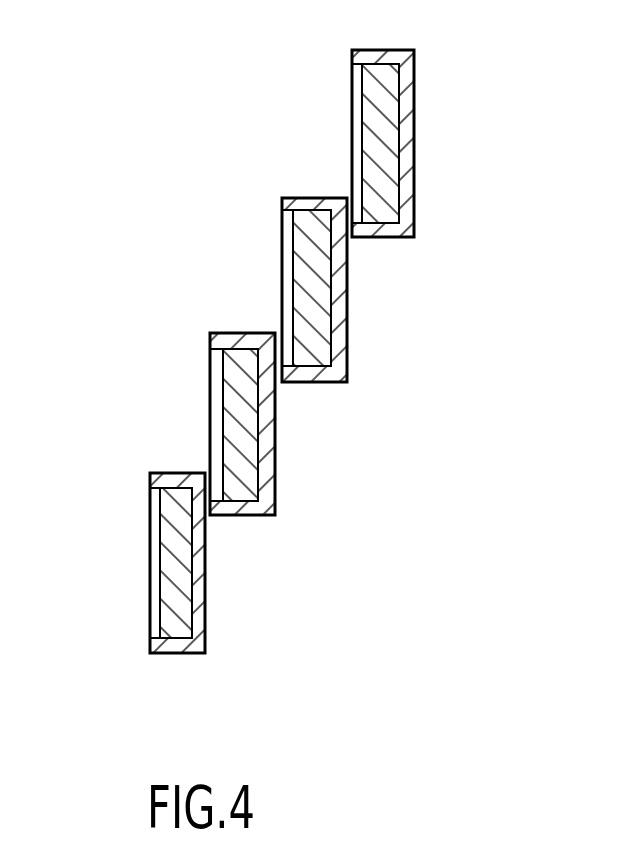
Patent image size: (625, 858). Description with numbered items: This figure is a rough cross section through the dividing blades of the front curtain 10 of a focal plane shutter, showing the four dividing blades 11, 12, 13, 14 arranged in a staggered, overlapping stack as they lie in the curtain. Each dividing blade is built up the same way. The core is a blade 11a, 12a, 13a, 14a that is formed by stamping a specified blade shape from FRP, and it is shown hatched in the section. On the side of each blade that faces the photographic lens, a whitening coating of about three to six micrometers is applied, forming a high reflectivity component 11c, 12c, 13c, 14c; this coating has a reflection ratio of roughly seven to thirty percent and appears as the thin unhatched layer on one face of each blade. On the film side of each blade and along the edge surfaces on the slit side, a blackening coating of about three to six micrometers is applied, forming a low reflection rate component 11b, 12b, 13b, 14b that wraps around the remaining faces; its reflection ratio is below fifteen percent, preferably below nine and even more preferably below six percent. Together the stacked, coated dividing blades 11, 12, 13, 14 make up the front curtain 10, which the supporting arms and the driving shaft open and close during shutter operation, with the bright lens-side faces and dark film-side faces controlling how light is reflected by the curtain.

The front curtain 10 is at (258, 218).
The dividing blade 11 is at (440, 184).
The blade 11a is at (368, 98).
The low reflection rate component 11b is at (353, 57).
The high reflectivity component 11c is at (356, 133).
The dividing blade 12 is at (372, 334).
The blade 12a is at (303, 270).
The low reflection rate component 12b is at (303, 203).
The high reflectivity component 12c is at (288, 298).
The dividing blade 13 is at (300, 457).
The blade 13a is at (237, 443).
The low reflection rate component 13b is at (214, 340).
The high reflectivity component 13c is at (214, 388).
The dividing blade 14 is at (230, 595).
The blade 14a is at (167, 577).
The low reflection rate component 14b is at (153, 482).
The high reflectivity component 14c is at (153, 528).